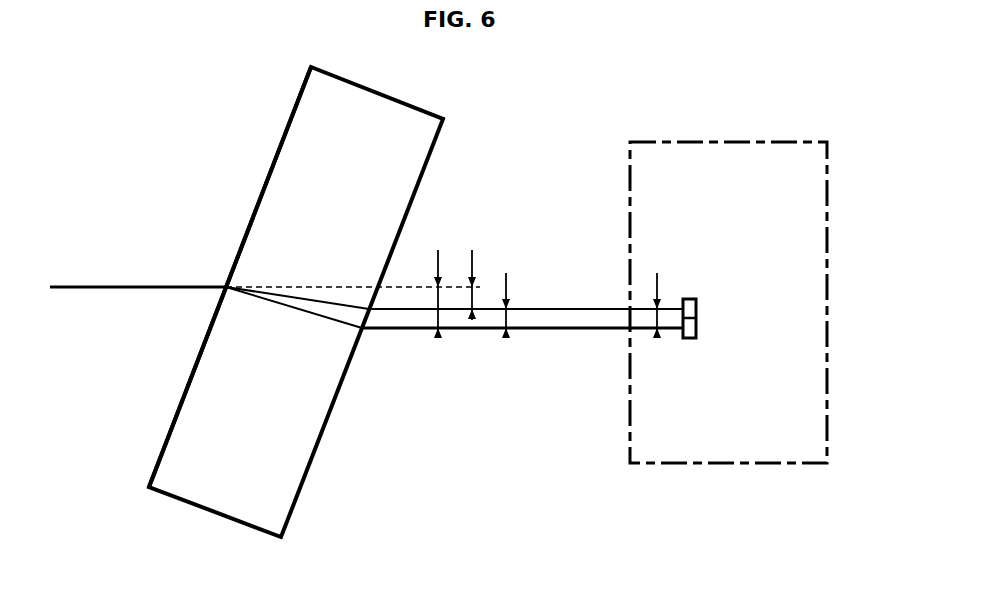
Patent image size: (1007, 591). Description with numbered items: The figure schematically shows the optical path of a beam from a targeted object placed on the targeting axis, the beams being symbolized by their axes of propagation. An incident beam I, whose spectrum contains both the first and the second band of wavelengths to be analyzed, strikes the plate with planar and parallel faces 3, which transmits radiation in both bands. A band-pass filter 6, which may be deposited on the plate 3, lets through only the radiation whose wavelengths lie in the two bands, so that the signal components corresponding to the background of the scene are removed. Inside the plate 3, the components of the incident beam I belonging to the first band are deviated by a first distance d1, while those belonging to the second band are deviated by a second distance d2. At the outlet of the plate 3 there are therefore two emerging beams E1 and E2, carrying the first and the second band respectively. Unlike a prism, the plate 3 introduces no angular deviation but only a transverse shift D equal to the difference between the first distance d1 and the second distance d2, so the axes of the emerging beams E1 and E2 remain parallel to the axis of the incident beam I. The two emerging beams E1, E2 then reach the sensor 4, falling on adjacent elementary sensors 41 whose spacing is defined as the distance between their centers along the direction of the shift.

The plate with planar and parallel faces 3 is at (377, 93).
The band-pass filter 6 is at (266, 156).
The incident beam I is at (137, 287).
The first emerging beam E1 is at (575, 331).
The second emerging beam E2 is at (575, 307).
The first distance d1 is at (451, 293).
The second distance d2 is at (485, 284).
The transverse shift D is at (588, 305).
The sensor 4 is at (731, 157).
The elementary sensors 41 is at (692, 312).